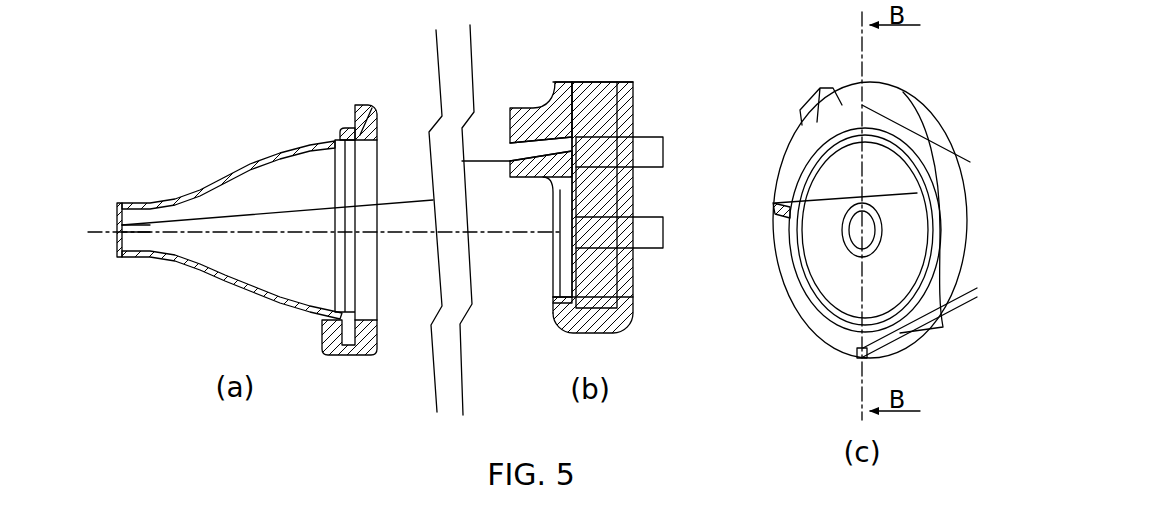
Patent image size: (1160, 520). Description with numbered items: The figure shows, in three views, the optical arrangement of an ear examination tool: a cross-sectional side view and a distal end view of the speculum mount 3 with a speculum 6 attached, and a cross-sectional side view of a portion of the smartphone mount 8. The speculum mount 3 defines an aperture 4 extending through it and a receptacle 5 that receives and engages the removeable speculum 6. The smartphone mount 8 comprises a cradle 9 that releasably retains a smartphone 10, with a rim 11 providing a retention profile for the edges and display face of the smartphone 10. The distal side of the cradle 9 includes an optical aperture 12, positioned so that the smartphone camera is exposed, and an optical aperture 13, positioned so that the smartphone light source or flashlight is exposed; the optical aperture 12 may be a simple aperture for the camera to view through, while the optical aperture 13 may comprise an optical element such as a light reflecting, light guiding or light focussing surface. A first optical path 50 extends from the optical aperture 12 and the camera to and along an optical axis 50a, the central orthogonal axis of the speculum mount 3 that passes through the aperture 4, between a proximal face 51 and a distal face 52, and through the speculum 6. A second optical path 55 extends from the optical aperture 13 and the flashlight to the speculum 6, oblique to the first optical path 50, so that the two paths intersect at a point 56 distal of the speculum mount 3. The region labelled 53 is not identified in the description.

The speculum mount 3 is at (366, 104).
The aperture 4 is at (365, 290).
The receptacle 5 is at (343, 350).
The speculum 6 is at (203, 277).
The smartphone mount 8 is at (637, 108).
The cradle 9 is at (623, 287).
The smartphone 10 is at (607, 88).
The rim 11 is at (560, 300).
The optical aperture 12 is at (562, 257).
The optical aperture 13 is at (542, 164).
The first optical path 50 is at (287, 235).
The optical axis 50a is at (160, 233).
The proximal face 51 is at (379, 121).
The distal face 52 is at (352, 124).
The holder step block 53 is at (537, 108).
The second optical path 55 is at (312, 211).
The intersection point 56 is at (112, 226).